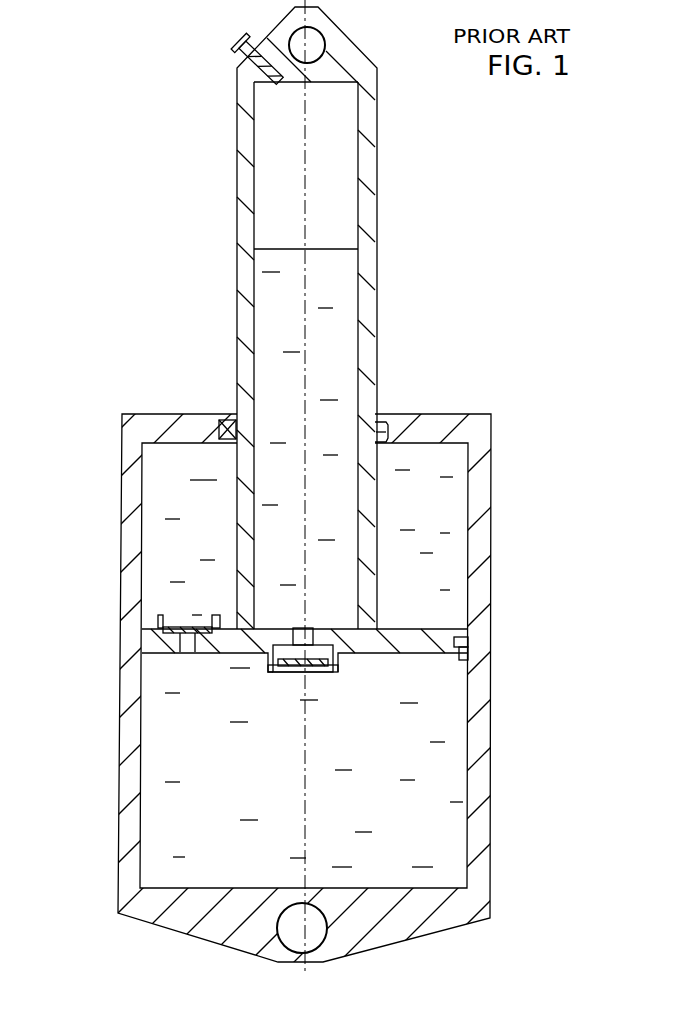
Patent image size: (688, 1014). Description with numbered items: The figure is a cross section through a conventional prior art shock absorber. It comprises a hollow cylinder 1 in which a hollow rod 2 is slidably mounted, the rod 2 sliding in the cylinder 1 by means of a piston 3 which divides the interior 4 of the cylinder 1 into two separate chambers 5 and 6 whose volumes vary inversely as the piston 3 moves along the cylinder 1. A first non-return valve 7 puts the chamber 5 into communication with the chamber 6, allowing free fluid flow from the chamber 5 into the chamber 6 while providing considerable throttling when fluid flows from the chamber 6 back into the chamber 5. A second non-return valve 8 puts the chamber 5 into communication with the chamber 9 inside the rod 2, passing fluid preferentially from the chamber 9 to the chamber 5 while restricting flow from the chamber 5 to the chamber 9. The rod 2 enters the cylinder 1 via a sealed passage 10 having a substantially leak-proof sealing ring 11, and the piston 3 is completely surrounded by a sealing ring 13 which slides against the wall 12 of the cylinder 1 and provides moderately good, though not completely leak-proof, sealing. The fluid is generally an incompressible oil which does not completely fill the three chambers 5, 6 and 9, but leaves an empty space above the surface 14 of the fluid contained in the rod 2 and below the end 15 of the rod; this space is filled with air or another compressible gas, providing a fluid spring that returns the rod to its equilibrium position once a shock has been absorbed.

The hollow cylinder 1 is at (115, 683).
The hollow rod 2 is at (384, 283).
The piston 3 is at (415, 642).
The interior 4 is at (452, 828).
The chamber 5 is at (172, 762).
The chamber 6 is at (153, 503).
The first non-return valve 7 is at (145, 622).
The second non-return valve 8 is at (343, 666).
The chamber 9 is at (343, 165).
The sealed passage 10 is at (371, 416).
The sealing ring 11 is at (228, 430).
The wall 12 is at (468, 485).
The sealing ring 13 is at (463, 667).
The surface 14 is at (282, 249).
The end 15 is at (242, 99).